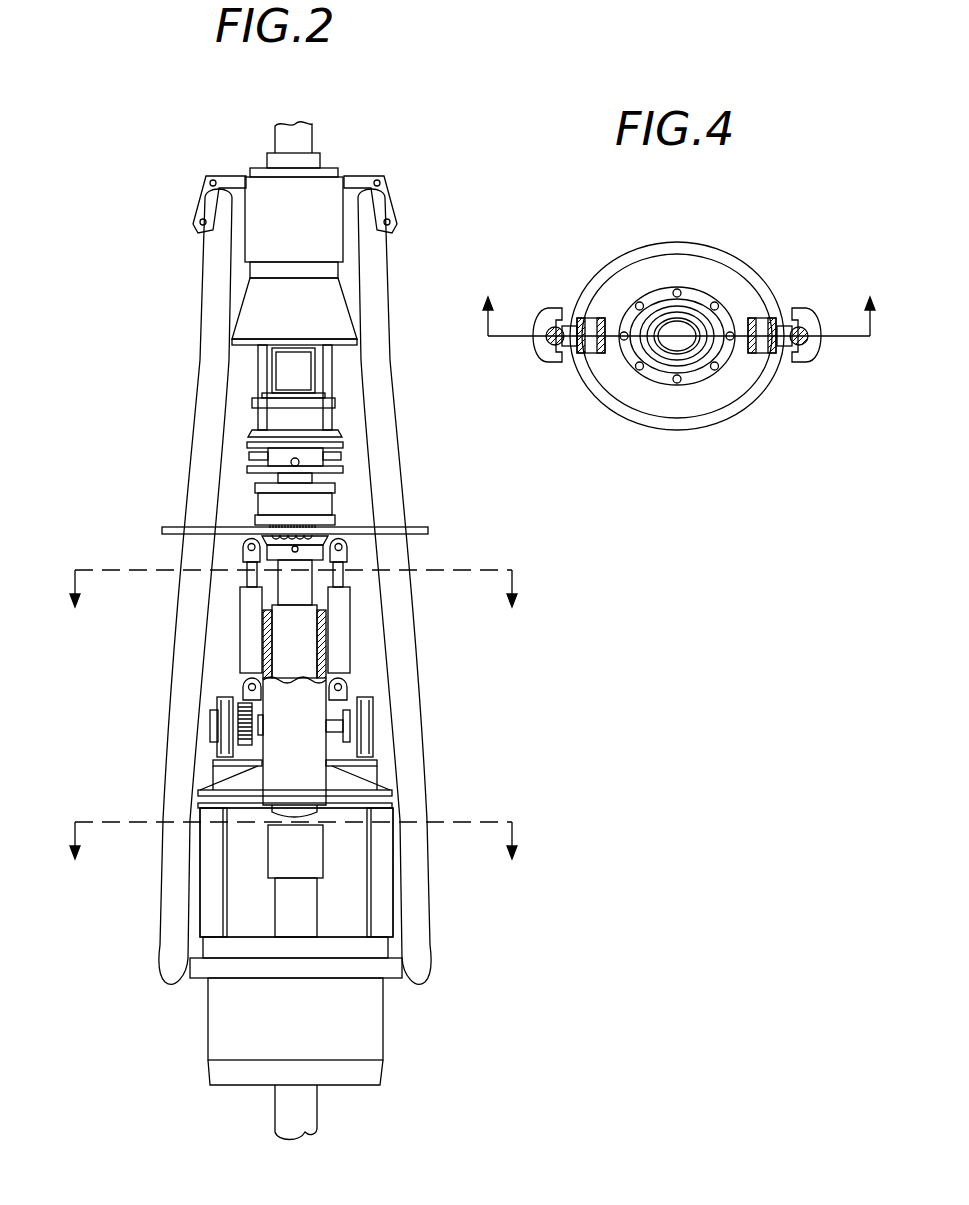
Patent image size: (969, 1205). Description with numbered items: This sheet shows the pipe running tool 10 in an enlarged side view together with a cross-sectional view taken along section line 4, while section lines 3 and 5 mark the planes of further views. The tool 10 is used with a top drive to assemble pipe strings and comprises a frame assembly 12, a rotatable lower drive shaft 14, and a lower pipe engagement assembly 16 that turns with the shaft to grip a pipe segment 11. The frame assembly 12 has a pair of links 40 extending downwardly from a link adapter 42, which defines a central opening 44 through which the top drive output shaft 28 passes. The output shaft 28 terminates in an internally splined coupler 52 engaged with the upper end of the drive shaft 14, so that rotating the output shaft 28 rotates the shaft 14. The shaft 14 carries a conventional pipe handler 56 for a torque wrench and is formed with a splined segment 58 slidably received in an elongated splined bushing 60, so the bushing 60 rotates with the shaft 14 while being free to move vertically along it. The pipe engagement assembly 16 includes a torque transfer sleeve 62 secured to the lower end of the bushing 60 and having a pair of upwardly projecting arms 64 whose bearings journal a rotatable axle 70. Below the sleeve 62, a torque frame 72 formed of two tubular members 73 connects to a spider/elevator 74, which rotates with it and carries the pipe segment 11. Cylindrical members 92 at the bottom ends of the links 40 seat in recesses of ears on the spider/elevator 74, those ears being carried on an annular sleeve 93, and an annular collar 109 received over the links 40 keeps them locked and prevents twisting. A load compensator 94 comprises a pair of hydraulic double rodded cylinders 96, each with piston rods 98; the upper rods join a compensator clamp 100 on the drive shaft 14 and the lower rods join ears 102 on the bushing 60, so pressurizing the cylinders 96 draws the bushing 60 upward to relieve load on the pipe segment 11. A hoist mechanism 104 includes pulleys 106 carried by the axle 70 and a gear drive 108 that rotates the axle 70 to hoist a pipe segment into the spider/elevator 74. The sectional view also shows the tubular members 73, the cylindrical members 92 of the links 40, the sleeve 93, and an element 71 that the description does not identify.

In FIG. 2, the pipe running tool 10 is at (455, 480).
In FIG. 2, the pipe segment 11 is at (283, 918).
In FIG. 4, the pipe segment 11 is at (670, 360).
In FIG. 2, the frame assembly 12 is at (187, 390).
In FIG. 2, the lower drive shaft 14 is at (310, 563).
In FIG. 2, the lower pipe engagement assembly 16 is at (178, 1000).
In FIG. 4, the lower pipe engagement assembly 16 is at (675, 430).
In FIG. 2, the top drive output shaft 28 is at (303, 142).
In FIG. 2, the links 40 is at (207, 368).
In FIG. 4, the links 40 is at (562, 322).
In FIG. 2, the link adapter 42 is at (203, 202).
In FIG. 2, the central opening 44 is at (277, 150).
In FIG. 2, the internally splined coupler 52 is at (283, 368).
In FIG. 2, the pipe handler 56 is at (238, 458).
In FIG. 2, the splined segment 58 is at (340, 640).
In FIG. 2, the splined bushing 60 is at (338, 672).
In FIG. 2, the torque transfer sleeve 62 is at (392, 783).
In FIG. 2, the upwardly projecting arms 64 is at (213, 723).
In FIG. 2, the rotatable axle 70 is at (345, 722).
In FIG. 4, the ring 71 is at (675, 281).
In FIG. 2, the torque frame 72 is at (393, 880).
In FIG. 2, the tubular members 73 is at (210, 898).
In FIG. 4, the tubular members 73 is at (747, 303).
In FIG. 2, the spider/elevator 74 is at (400, 1007).
In FIG. 4, the cylindrical members 92 is at (805, 315).
In FIG. 4, the annular sleeve 93 is at (798, 365).
In FIG. 2, the load compensator 94 is at (220, 627).
In FIG. 2, the hydraulic double rodded cylinders 96 is at (248, 640).
In FIG. 2, the piston rods 98 is at (250, 583).
In FIG. 2, the compensator clamp 100 is at (235, 548).
In FIG. 2, the ears 102 is at (325, 697).
In FIG. 2, the hoist mechanism 104 is at (212, 702).
In FIG. 2, the pulleys 106 is at (247, 746).
In FIG. 2, the gear drive 108 is at (248, 767).
In FIG. 2, the annular collar 109 is at (175, 528).
In FIG. 2, the section line 3 is at (293, 607).
In FIG. 2, the section line 4— 4 is at (293, 859).
In FIG. 4, the section line 5 is at (683, 299).